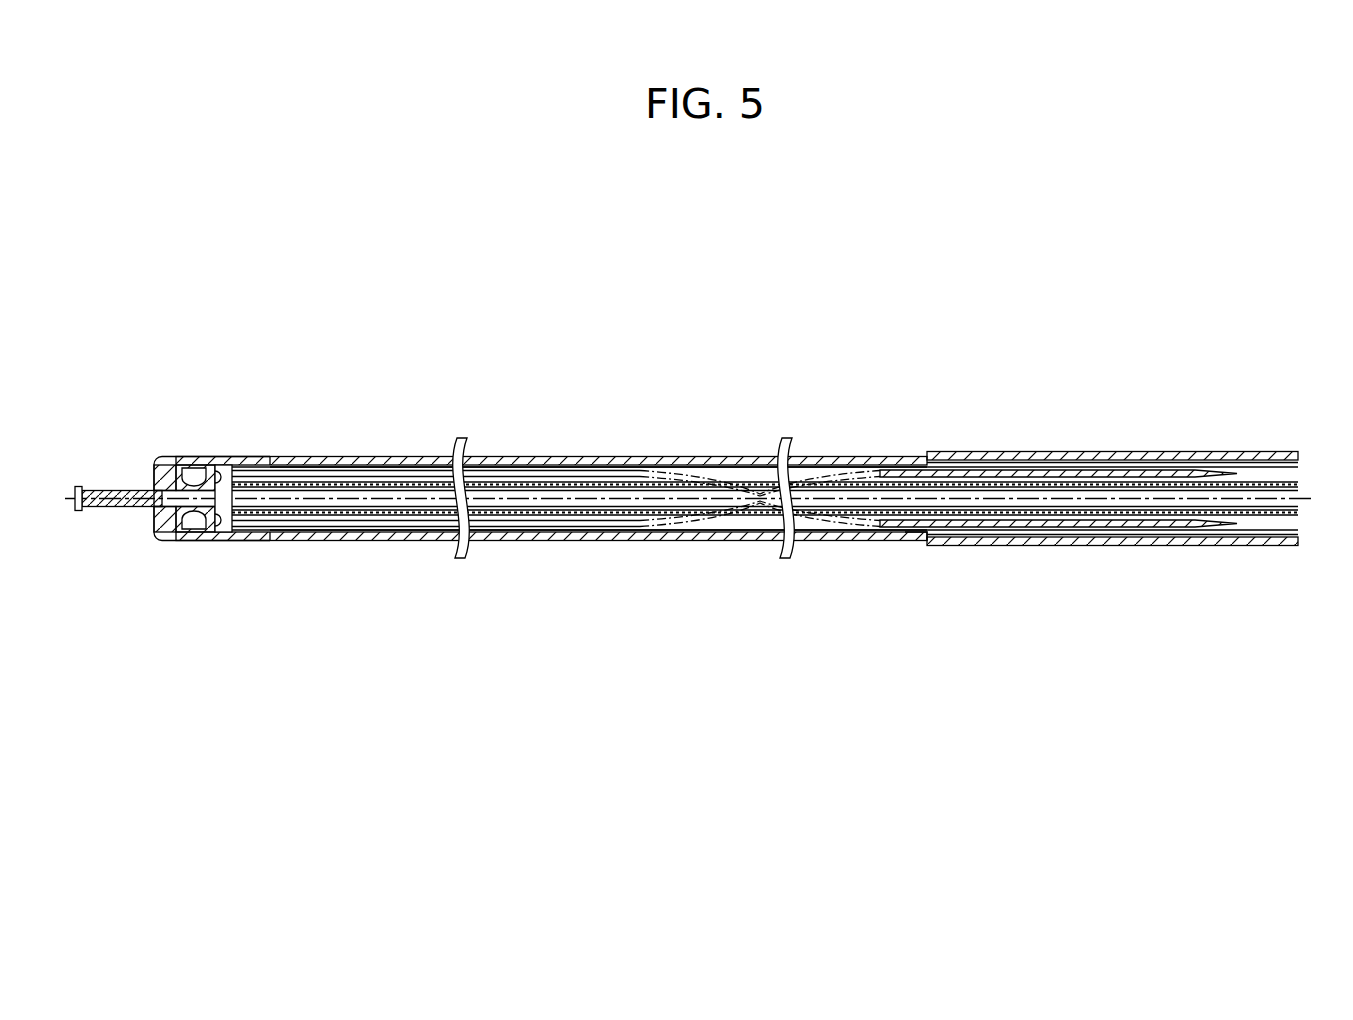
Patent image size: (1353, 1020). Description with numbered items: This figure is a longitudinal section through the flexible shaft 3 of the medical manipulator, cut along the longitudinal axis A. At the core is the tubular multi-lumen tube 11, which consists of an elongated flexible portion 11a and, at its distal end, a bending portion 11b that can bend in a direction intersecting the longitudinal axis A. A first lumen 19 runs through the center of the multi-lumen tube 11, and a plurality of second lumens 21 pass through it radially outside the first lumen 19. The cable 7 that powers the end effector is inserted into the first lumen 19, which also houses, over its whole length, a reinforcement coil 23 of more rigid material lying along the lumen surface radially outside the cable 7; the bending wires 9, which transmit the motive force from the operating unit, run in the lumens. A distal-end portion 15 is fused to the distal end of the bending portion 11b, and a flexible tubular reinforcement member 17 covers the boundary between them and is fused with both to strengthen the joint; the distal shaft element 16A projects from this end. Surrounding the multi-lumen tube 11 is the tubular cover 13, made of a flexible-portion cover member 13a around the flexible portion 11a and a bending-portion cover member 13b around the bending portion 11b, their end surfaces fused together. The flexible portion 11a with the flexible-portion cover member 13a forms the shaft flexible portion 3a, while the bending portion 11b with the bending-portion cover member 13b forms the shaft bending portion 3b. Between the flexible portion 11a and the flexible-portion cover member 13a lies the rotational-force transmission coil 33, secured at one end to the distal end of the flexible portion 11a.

The flexible shaft 3 is at (1133, 260).
The shaft flexible portion 3a is at (1307, 374).
The shaft bending portion 3b is at (508, 374).
The cable 7 is at (1137, 532).
The bending wires 9 is at (1061, 470).
The multi-lumen tube 11 is at (678, 620).
The flexible portion 11a is at (652, 530).
The bending portion 11b is at (412, 530).
The cover 13 is at (1143, 736).
The flexible-portion cover member 13a is at (1100, 546).
The bending-portion cover member 13b is at (737, 541).
The distal-end portion 15 is at (125, 461).
The shaft 16A is at (110, 510).
The reinforcement member 17 is at (236, 541).
The first lumen 19 is at (1186, 507).
The second lumens 21 is at (843, 522).
The reinforcement coil 23 is at (1013, 514).
The rotational-force transmission coil 33 is at (905, 541).
The longitudinal axis A is at (701, 497).